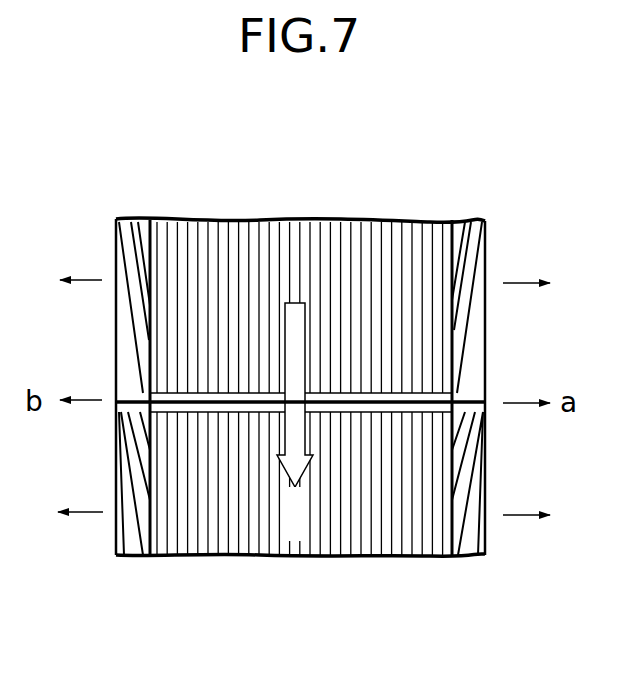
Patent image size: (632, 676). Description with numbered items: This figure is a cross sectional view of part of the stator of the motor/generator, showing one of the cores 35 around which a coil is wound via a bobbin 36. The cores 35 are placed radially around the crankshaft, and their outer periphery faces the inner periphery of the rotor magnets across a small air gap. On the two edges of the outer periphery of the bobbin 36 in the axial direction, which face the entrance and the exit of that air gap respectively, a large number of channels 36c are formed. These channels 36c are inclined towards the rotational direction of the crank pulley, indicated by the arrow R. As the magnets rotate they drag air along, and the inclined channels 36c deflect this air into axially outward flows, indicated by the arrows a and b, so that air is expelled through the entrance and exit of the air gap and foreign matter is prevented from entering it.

The core 35 is at (272, 220).
The bobbin 36 is at (492, 235).
The channel 36c is at (120, 270).